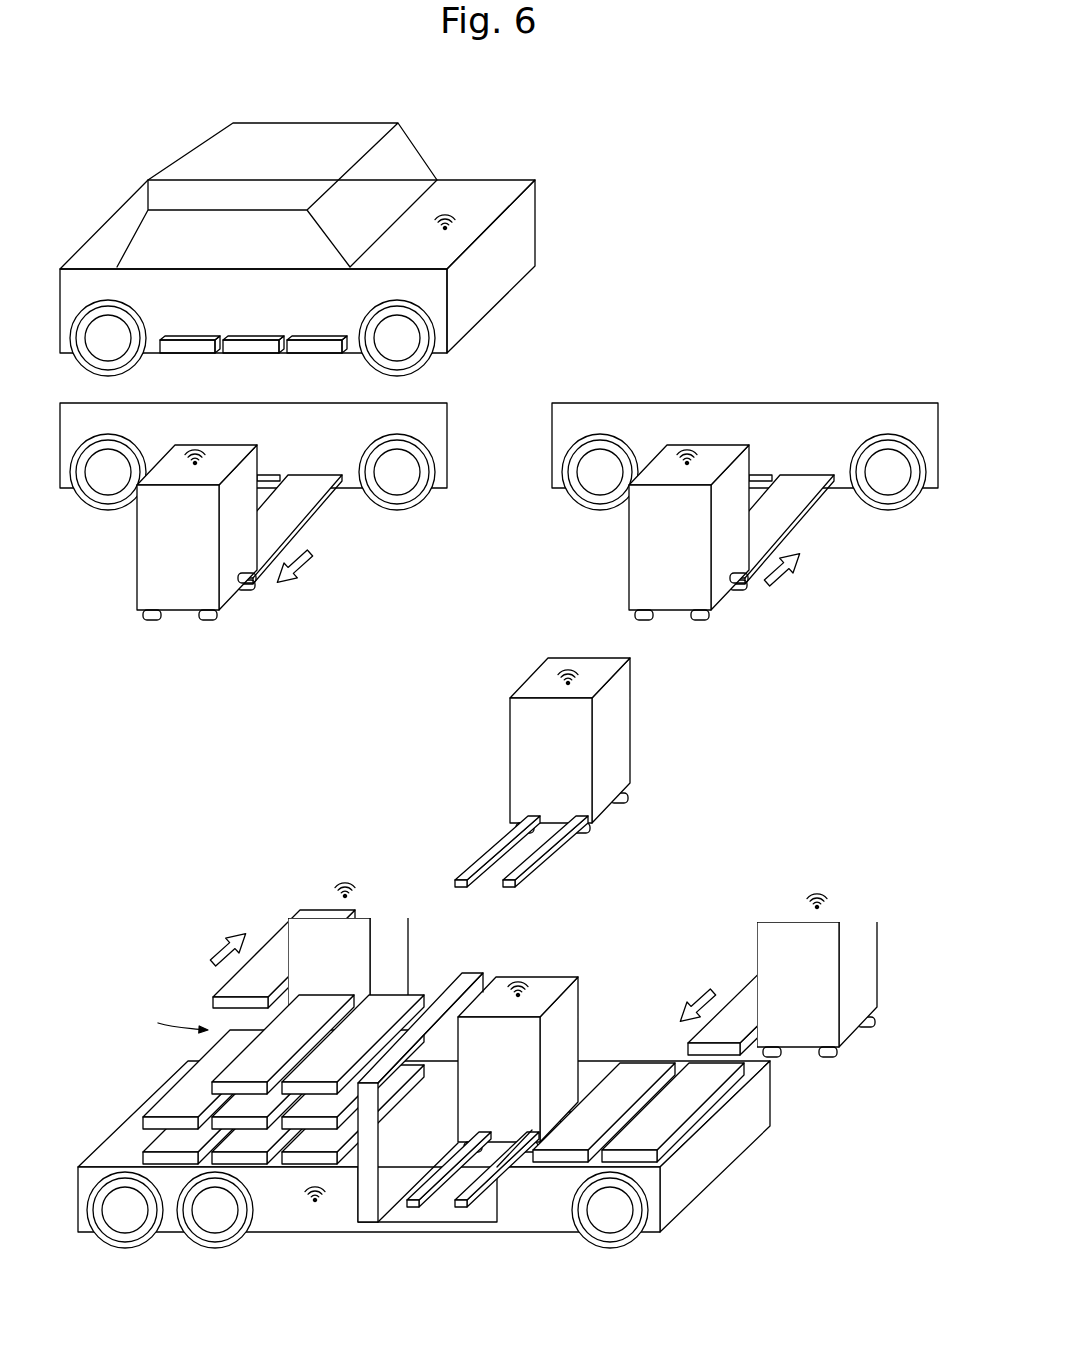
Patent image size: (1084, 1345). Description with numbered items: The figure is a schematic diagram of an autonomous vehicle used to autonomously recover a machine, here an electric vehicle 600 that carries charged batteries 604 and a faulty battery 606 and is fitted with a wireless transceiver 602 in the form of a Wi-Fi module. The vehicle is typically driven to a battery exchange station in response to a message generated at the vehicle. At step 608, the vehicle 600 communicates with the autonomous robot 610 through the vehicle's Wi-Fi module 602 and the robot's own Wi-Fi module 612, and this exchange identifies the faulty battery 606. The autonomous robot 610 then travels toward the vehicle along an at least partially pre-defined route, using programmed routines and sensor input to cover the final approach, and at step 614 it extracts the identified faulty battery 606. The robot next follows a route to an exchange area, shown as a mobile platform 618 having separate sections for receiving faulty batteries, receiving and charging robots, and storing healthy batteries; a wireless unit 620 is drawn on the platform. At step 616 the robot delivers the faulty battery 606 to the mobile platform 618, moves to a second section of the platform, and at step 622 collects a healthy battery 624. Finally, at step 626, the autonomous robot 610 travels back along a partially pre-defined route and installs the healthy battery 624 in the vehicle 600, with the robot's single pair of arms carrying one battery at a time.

The electric vehicle 600 is at (583, 206).
The wireless transceiver 602 is at (453, 208).
The charged batteries 604 is at (187, 340).
The faulty battery 606 is at (310, 340).
The vehicle-robot communication step 608 is at (472, 748).
The autonomous robot 610 is at (180, 587).
The Wi-Fi module 612 is at (188, 468).
The faulty battery extraction step 614 is at (336, 596).
The faulty battery delivery step 616 is at (858, 840).
The mobile platform 618 is at (693, 1188).
The donor vehicle wireless communication unit 620 is at (308, 1203).
The healthy battery collection step 622 is at (287, 858).
The charged battery module 624 is at (776, 520).
The battery installation step 626 is at (812, 618).